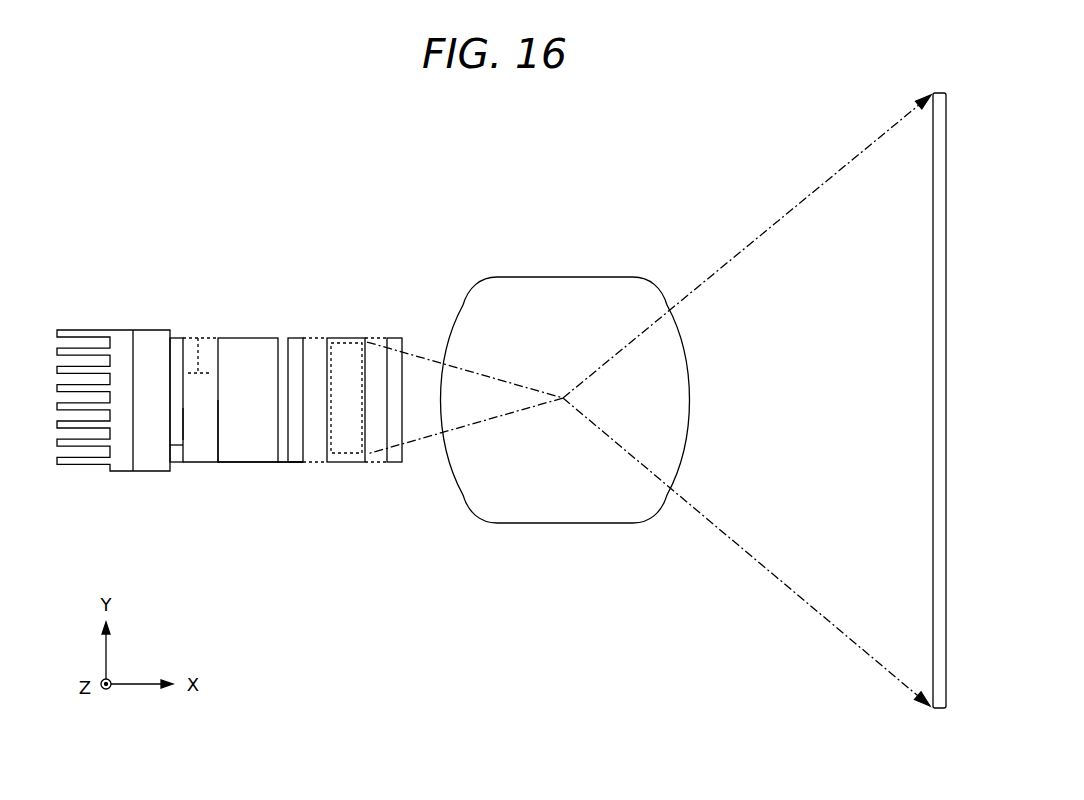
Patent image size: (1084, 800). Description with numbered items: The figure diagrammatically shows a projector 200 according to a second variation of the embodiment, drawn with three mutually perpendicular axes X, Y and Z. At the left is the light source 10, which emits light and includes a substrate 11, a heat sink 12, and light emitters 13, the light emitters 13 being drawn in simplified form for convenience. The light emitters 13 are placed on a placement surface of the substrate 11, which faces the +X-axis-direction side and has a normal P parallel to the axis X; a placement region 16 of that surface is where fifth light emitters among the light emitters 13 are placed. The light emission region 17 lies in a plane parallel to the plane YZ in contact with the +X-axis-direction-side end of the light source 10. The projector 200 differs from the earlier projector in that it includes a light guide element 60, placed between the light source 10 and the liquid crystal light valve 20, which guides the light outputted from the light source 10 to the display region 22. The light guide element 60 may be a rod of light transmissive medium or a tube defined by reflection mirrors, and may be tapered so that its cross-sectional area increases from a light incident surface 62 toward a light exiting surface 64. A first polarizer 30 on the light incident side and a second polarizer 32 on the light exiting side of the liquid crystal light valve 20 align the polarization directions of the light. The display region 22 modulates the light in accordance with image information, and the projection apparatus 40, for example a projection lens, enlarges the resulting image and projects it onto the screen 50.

The light source 10 is at (182, 260).
The substrate 11 is at (147, 347).
The heat sink 12 is at (120, 347).
The light emitters 13 is at (178, 340).
The normal P is at (197, 312).
The placement region 16 is at (183, 447).
The light emission region 17 is at (183, 408).
The light guide element 60 is at (245, 357).
The light incident surface 62 is at (207, 422).
The light exiting surface 64 is at (278, 450).
The first polarizer 30 is at (297, 347).
The liquid crystal light valve 20 is at (350, 357).
The display region 22 is at (338, 360).
The second polarizer 32 is at (395, 347).
The projection apparatus 40 is at (560, 307).
The screen 50 is at (932, 137).
The projector 200 is at (638, 243).